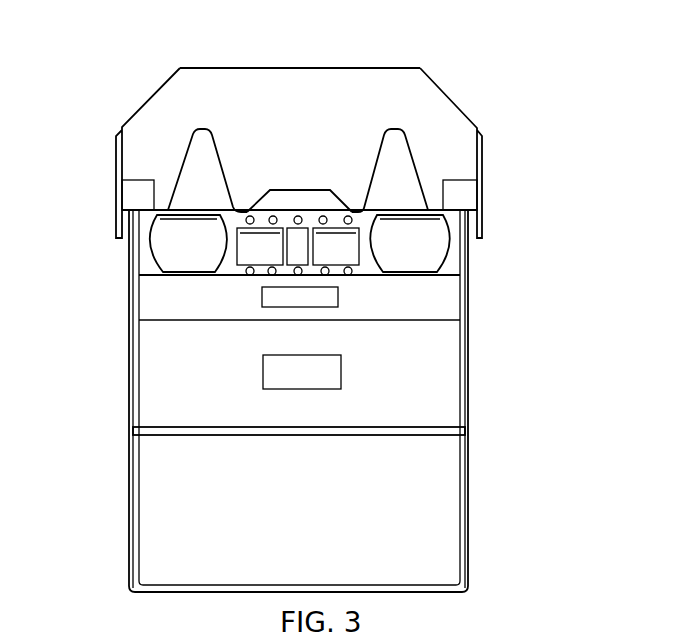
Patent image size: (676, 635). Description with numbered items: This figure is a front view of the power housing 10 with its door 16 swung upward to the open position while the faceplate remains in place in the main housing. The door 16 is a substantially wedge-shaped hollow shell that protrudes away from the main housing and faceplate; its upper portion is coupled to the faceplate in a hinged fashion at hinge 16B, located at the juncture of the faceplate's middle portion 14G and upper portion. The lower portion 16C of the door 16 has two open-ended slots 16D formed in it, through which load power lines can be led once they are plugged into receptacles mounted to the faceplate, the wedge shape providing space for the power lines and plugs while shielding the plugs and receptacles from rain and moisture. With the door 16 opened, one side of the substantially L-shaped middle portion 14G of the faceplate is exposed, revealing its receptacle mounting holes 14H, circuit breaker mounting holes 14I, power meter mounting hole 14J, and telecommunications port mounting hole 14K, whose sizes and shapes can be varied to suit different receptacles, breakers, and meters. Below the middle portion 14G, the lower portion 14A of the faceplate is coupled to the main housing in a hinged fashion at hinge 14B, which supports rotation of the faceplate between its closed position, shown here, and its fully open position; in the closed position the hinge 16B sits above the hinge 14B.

The power housing 10 is at (536, 113).
The lower portion of faceplate 14A is at (388, 406).
The hinge 14B is at (129, 428).
The middle portion of faceplate 14G is at (455, 313).
The receptacle mounting holes 14H is at (150, 243).
The circuit breaker mounting holes 14I is at (340, 264).
The power meter mounting hole 14J is at (338, 296).
The telecommunications port mounting hole 14K is at (263, 372).
The door 16 is at (256, 67).
The hinge 16B is at (123, 222).
The lower portion of door 16C is at (303, 95).
The open-ended slots 16D is at (188, 137).